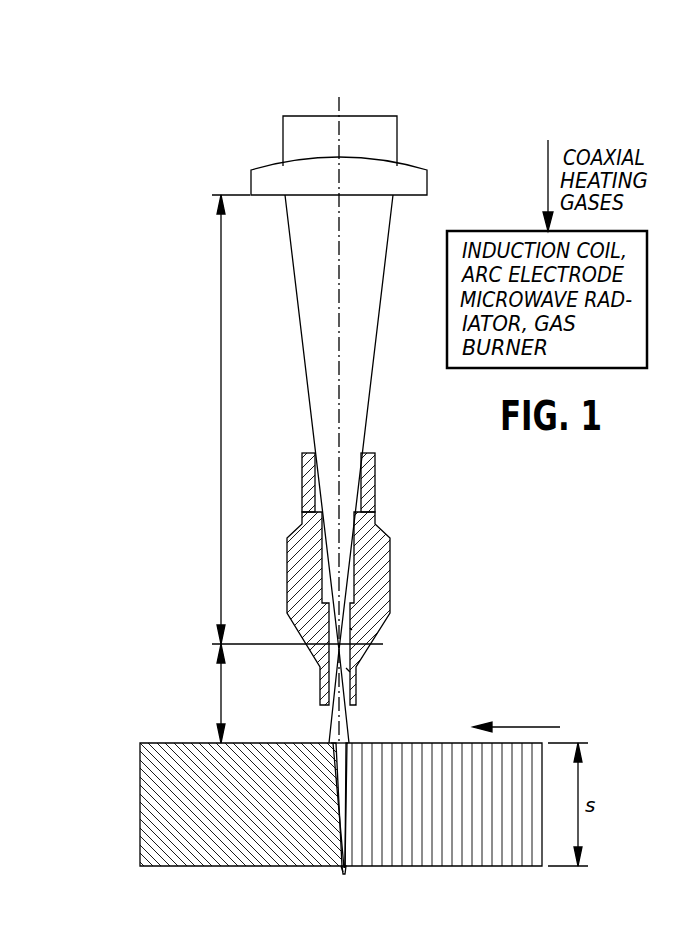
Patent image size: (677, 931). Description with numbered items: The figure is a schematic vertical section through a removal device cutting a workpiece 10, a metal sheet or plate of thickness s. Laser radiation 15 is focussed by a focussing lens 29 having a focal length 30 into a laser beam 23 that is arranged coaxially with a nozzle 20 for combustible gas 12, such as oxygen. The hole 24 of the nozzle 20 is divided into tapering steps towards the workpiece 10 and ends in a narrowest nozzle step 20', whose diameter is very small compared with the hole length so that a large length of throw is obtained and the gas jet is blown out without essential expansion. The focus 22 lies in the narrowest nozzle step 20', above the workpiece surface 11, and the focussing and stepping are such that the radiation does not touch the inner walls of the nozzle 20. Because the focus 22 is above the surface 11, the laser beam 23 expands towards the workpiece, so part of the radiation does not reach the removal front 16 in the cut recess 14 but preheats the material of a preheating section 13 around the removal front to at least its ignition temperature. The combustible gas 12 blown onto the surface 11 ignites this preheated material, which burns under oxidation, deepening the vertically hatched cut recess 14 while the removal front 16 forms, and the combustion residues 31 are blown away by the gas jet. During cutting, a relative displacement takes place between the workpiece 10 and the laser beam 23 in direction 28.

The workpiece 10 is at (200, 752).
The workpiece surface 11 is at (380, 739).
The combustible gas 12 is at (365, 483).
The preheating section 13 is at (334, 742).
The cut recess 14 is at (350, 838).
The laser radiation 15 is at (283, 138).
The removal front 16 is at (345, 812).
The nozzle 20 is at (345, 575).
The narrowest nozzle step 20' is at (382, 685).
The focus 22 is at (313, 645).
The laser beam 23 is at (376, 347).
The hole 24 is at (350, 630).
The direction 28 is at (532, 727).
The focussing lens 29 is at (251, 183).
The focal length 30 is at (221, 430).
The combustion residues 31 is at (342, 870).